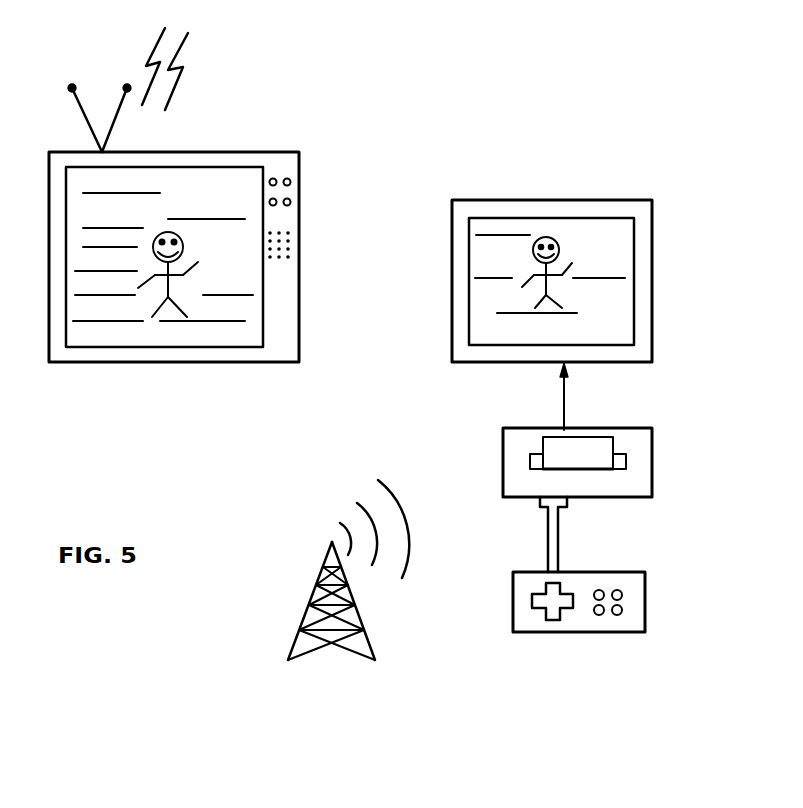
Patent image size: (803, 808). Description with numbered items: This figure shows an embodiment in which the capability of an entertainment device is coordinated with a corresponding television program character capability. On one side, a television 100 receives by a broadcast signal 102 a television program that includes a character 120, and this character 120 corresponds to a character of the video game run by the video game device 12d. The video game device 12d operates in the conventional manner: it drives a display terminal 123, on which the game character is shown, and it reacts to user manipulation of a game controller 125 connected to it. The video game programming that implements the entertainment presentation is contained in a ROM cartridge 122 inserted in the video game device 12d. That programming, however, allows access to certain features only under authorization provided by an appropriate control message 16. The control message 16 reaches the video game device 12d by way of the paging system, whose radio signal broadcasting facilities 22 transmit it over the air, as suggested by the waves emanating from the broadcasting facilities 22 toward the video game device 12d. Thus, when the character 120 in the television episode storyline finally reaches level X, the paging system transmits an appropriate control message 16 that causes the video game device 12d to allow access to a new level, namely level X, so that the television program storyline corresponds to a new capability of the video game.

The television 100 is at (298, 162).
The broadcast signal 102 is at (187, 50).
The character 120 is at (186, 243).
The display terminal 123 is at (653, 330).
The ROM cartridge 122 is at (605, 448).
The video game device 12d is at (610, 458).
The game controller 125 is at (647, 603).
The control message 16 is at (453, 497).
The radio signal broadcasting facilities 22 is at (295, 640).